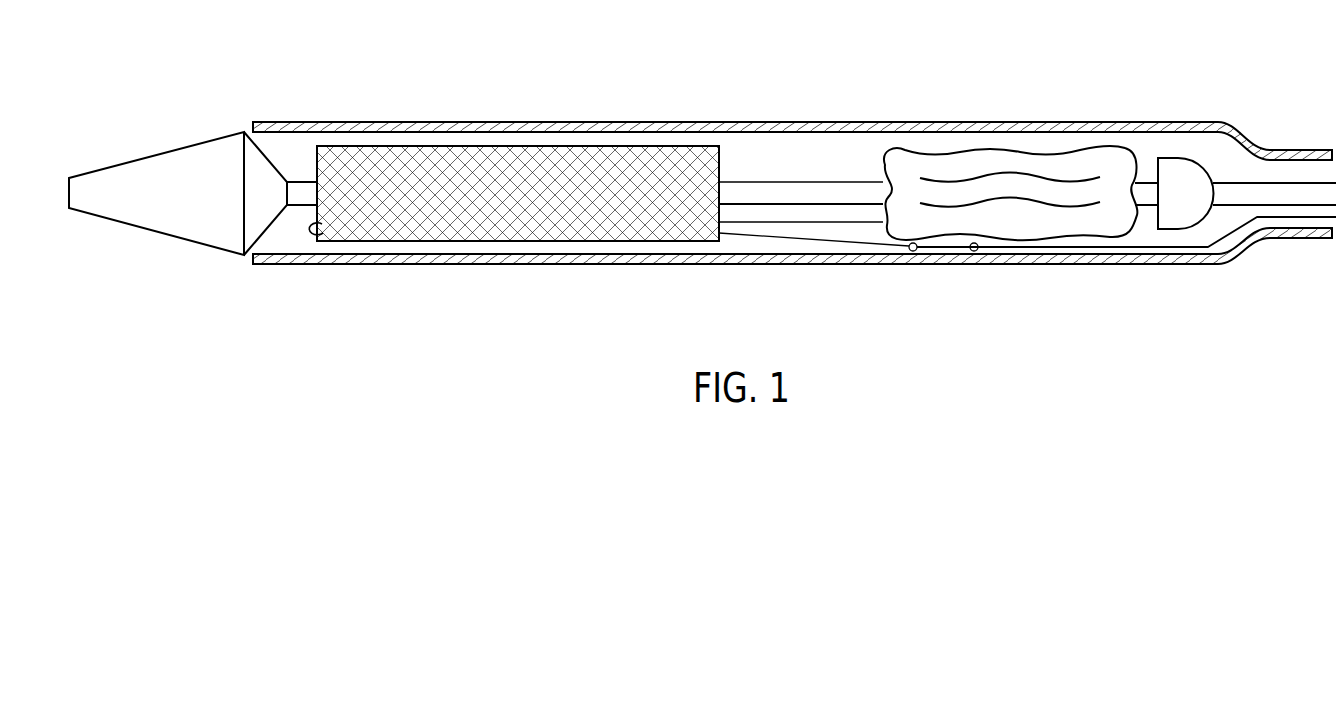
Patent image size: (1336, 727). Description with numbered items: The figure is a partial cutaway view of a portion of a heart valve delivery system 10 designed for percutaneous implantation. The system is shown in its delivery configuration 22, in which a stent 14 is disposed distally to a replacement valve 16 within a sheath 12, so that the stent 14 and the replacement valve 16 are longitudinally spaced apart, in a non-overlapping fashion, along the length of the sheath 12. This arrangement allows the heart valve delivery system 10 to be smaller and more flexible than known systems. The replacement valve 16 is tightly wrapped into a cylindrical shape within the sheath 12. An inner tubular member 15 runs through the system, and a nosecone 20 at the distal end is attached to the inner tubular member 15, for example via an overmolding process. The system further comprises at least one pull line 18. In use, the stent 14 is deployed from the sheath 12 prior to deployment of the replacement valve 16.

The heart valve delivery system 10 is at (1198, 63).
The sheath 12 is at (653, 122).
The stent 14 is at (563, 147).
The inner tubular member 15 is at (1288, 180).
The replacement valve 16 is at (1055, 223).
The pull line 18 is at (1190, 248).
The nosecone 20 is at (197, 143).
The delivery configuration 22 is at (491, 310).